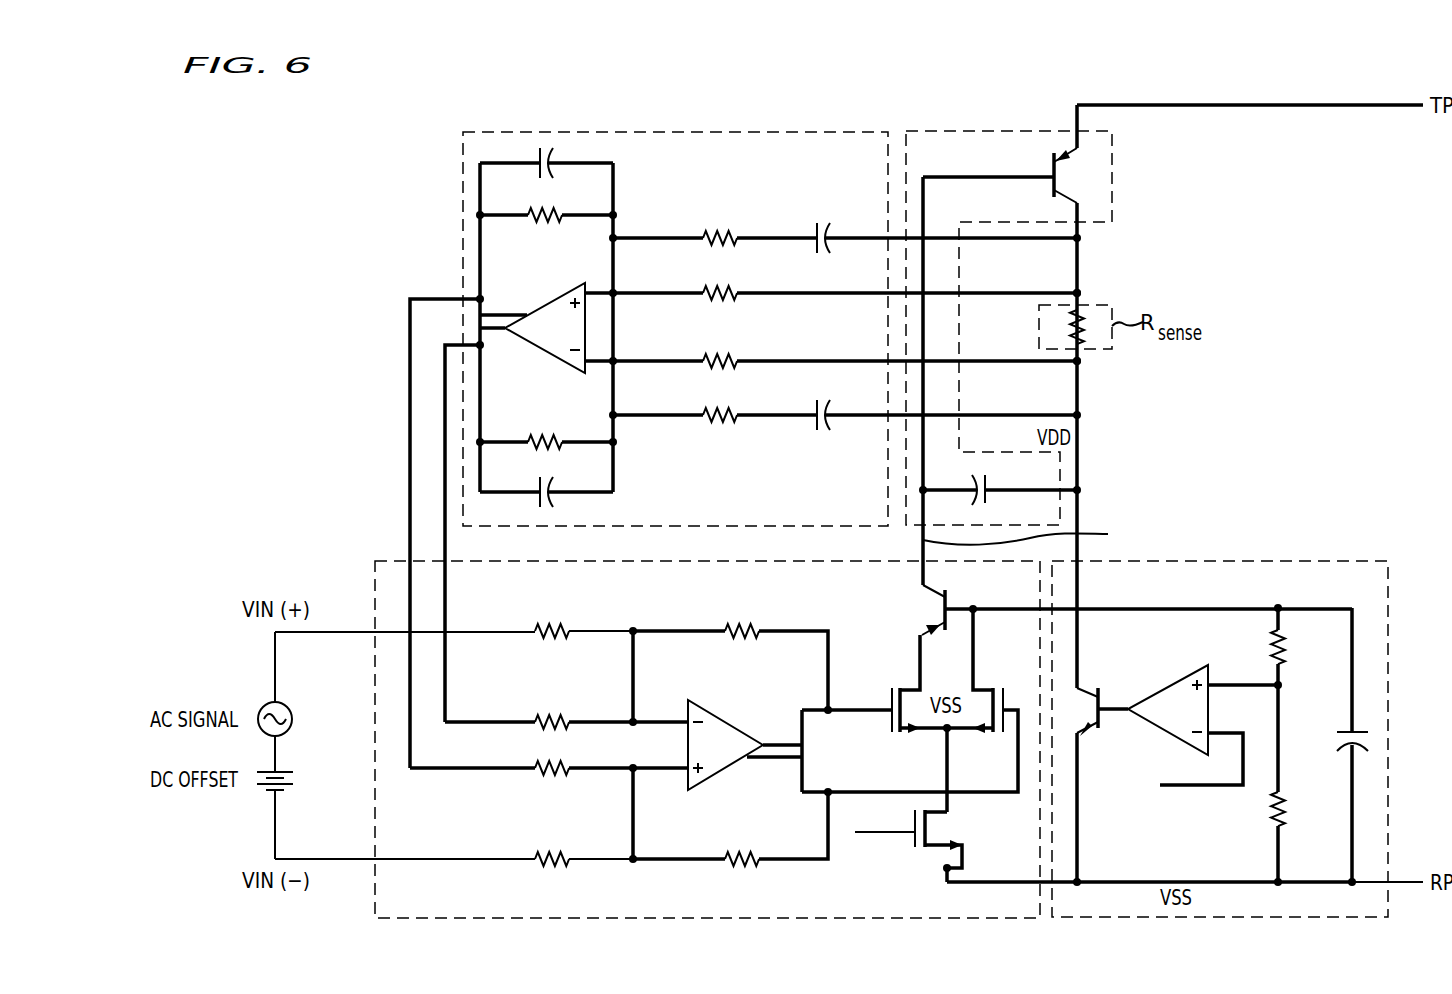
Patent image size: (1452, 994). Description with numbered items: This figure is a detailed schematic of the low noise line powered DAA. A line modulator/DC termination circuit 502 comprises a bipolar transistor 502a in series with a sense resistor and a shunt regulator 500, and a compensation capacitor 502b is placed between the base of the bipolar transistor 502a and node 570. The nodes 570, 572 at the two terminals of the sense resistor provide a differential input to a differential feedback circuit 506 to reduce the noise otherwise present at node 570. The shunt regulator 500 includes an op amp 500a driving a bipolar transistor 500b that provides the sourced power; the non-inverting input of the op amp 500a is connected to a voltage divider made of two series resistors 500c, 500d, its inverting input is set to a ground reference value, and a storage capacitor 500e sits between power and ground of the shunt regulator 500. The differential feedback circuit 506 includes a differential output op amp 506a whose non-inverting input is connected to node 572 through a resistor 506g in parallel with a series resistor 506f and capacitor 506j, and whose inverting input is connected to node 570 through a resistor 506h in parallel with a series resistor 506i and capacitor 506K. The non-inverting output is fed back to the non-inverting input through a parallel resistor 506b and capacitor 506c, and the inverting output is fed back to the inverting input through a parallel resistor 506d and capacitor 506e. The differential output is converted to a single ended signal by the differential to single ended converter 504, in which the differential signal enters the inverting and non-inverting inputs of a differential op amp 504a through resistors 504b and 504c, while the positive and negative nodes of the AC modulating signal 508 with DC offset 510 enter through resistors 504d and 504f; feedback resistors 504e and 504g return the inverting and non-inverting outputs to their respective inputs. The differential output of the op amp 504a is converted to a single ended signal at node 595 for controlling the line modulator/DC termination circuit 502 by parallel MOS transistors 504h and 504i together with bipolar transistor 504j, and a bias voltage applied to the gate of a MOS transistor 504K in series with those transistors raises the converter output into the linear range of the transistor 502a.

The shunt regulator 500 is at (1245, 560).
The op amp 500a is at (1166, 683).
The bipolar transistor 500b is at (1100, 728).
The resistor 500c is at (1283, 651).
The resistor 500d is at (1283, 813).
The storage capacitor 500e is at (1338, 732).
The line modulator/DC termination circuit 502 is at (1115, 176).
The bipolar transistor 502a is at (1053, 190).
The compensation capacitor 502b is at (990, 487).
The differential to single ended converter 504 is at (675, 918).
The differential op amp 504a is at (730, 722).
The resistor 504b is at (560, 712).
The resistor 504c is at (554, 762).
The resistor 504d is at (560, 620).
The resistor 504e is at (750, 620).
The resistor 504f is at (560, 850).
The resistor 504g is at (750, 850).
The MOS transistor 504h is at (907, 687).
The MOS transistor 504i is at (986, 687).
The bipolar transistor 504j is at (943, 595).
The MOS transistor 504K is at (931, 853).
The differential feedback circuit 506 is at (673, 131).
The differential output op amp 506a is at (540, 299).
The resistor 506b is at (545, 223).
The capacitor 506c is at (540, 172).
The resistor 506d is at (553, 429).
The capacitor 506e is at (540, 482).
The resistor 506f is at (714, 228).
The resistor 506g is at (721, 288).
The resistor 506h is at (713, 355).
The resistor 506i is at (721, 409).
The capacitor 506j is at (815, 229).
The capacitor 506K is at (815, 428).
The AC modulating signal 508 is at (294, 718).
The DC offset 510 is at (296, 779).
The node 570 is at (1080, 362).
The node 572 is at (1080, 296).
The node 595 is at (1031, 534).